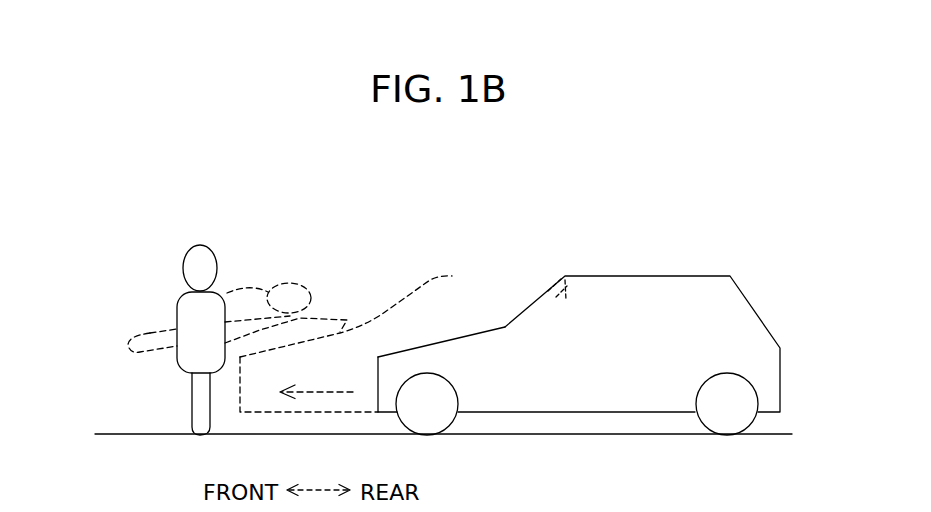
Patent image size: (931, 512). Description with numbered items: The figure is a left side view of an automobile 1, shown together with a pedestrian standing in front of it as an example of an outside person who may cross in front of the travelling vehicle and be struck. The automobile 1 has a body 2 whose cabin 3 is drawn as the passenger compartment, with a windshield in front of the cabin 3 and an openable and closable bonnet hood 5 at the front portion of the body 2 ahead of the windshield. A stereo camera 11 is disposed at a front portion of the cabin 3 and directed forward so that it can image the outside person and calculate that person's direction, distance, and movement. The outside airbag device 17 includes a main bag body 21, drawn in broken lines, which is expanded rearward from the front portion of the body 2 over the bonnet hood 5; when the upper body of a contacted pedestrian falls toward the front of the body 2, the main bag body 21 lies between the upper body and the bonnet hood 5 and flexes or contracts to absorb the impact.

The automobile 1 is at (610, 210).
The body 2 is at (587, 274).
The cabin 3 is at (690, 303).
The bonnet hood 5 is at (482, 332).
The stereo camera 11 is at (557, 287).
The outside airbag device 17 is at (346, 316).
The main bag body 21 is at (332, 312).